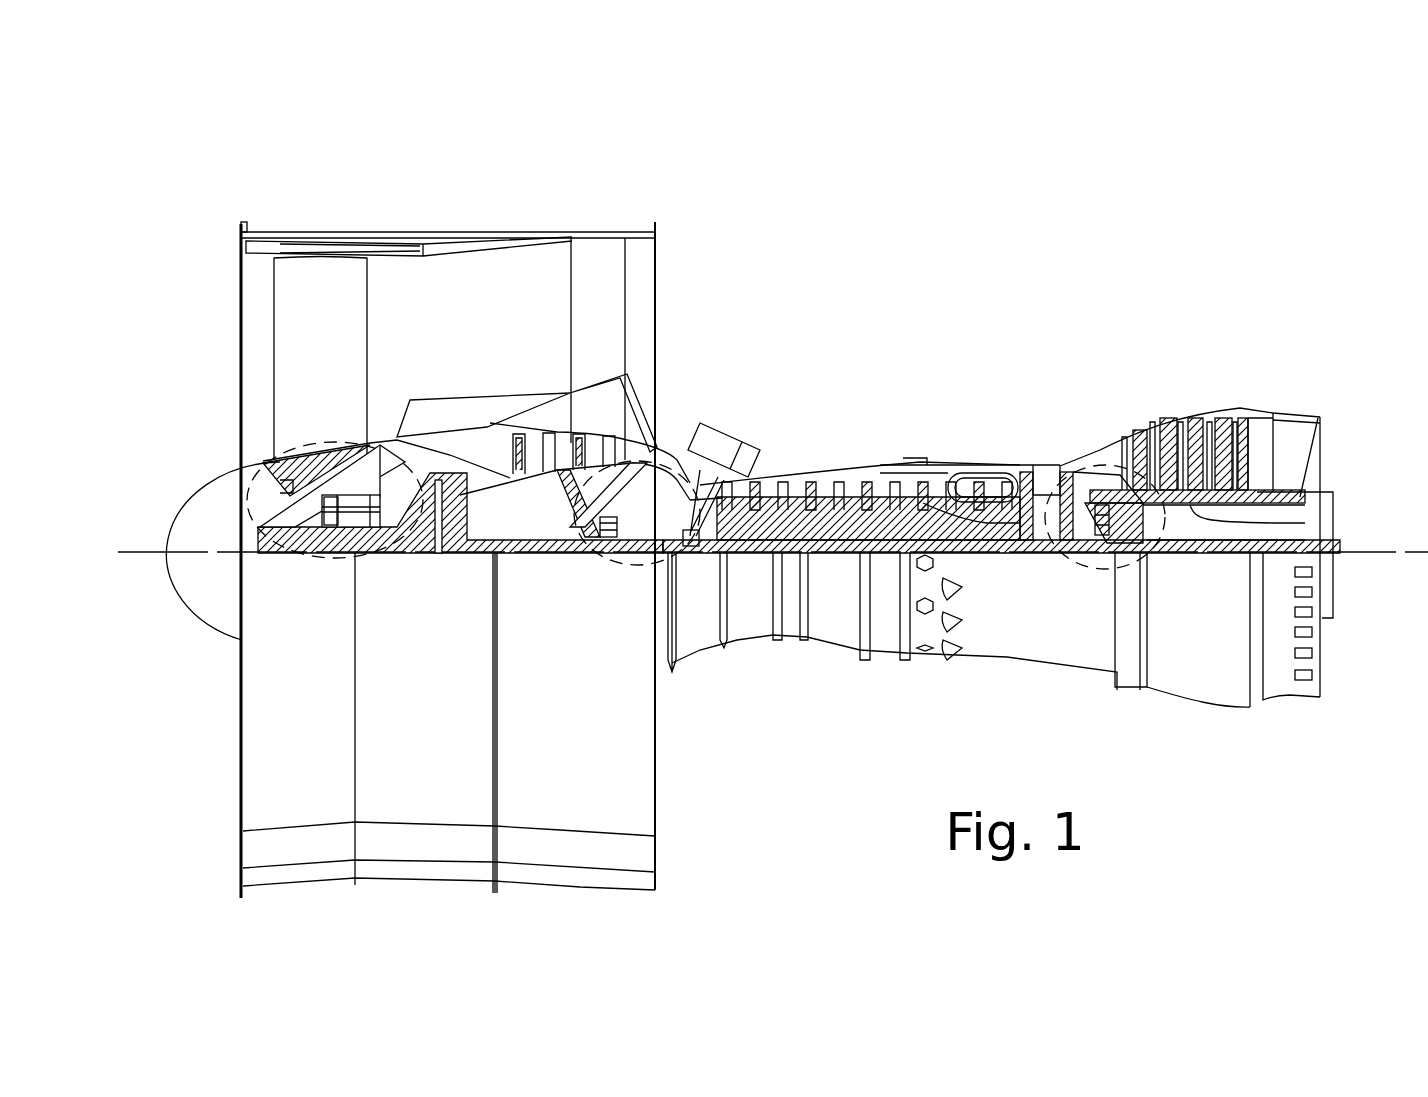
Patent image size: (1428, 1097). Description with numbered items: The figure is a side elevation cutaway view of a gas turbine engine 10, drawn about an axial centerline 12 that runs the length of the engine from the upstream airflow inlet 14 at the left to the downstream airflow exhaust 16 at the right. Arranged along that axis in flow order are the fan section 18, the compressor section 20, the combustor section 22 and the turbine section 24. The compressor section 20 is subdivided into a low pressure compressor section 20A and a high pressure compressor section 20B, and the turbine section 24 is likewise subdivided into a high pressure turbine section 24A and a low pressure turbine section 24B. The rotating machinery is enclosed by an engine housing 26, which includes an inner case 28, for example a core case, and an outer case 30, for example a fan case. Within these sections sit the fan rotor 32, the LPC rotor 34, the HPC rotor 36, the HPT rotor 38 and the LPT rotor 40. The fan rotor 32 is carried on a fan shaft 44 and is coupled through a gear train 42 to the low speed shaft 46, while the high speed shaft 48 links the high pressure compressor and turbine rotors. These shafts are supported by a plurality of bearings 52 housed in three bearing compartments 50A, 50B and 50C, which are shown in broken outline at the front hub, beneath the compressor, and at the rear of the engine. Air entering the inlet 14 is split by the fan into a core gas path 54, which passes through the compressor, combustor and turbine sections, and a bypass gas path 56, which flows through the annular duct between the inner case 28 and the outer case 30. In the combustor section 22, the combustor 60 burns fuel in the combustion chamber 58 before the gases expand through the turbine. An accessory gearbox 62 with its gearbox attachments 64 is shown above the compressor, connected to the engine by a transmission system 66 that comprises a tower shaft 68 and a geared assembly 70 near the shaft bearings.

The gas turbine engine 10 is at (1272, 198).
The axial centerline 12 is at (1381, 552).
The upstream airflow inlet 14 is at (241, 334).
The downstream airflow exhaust 16 is at (1323, 452).
The fan section 18 is at (427, 195).
The compressor section 20 is at (870, 136).
The low pressure compressor section 20A is at (655, 366).
The high pressure compressor section 20B is at (703, 339).
The combustor section 22 is at (1012, 340).
The turbine section 24 is at (1012, 248).
The high pressure turbine section 24A is at (1012, 340).
The low pressure turbine section 24B is at (1272, 340).
The engine housing 26 is at (673, 666).
The inner case 28 is at (888, 655).
The outer case 30 is at (575, 893).
The fan rotor 32 is at (282, 480).
The LPC rotor 34 is at (532, 553).
The HPC rotor 36 is at (830, 556).
The HPT rotor 38 is at (1057, 550).
The LPT rotor 40 is at (1262, 522).
The gear train 42 is at (453, 553).
The fan shaft 44 is at (313, 553).
The low speed shaft 46 is at (1202, 553).
The high speed shaft 48 is at (990, 553).
The bearing compartment 50A is at (305, 447).
The bearing compartment 50B is at (600, 470).
The bearing compartment 50C is at (1088, 572).
The bearings 52 is at (343, 553).
The core gas path 54 is at (447, 436).
The bypass gas path 56 is at (430, 314).
The combustion chamber 58 is at (970, 480).
The combustor 60 is at (995, 470).
The accessory gearbox 62 is at (712, 428).
The gearbox attachments 64 is at (752, 447).
The transmission system 66 is at (680, 480).
The tower shaft 68 is at (735, 480).
The geared assembly 70 is at (680, 548).